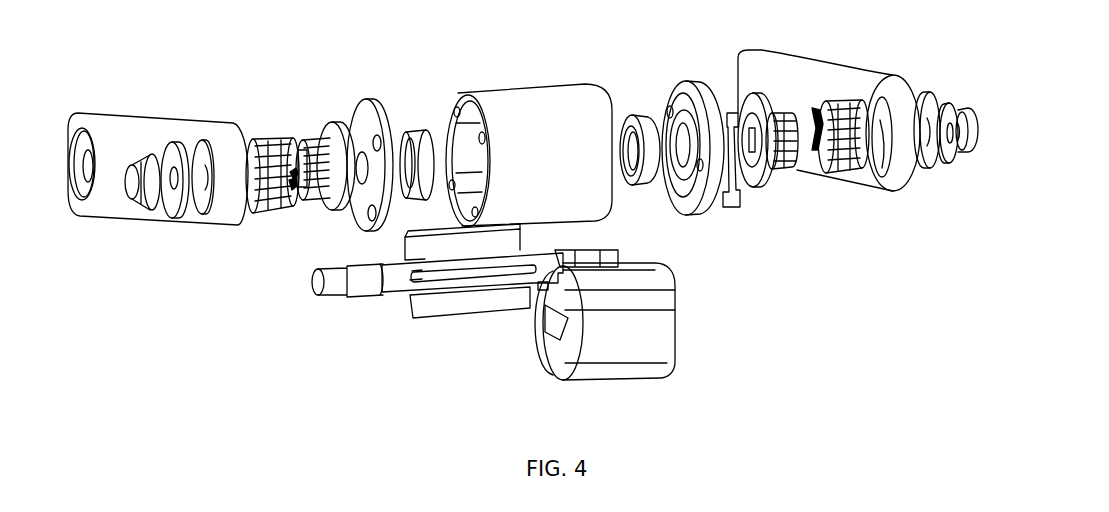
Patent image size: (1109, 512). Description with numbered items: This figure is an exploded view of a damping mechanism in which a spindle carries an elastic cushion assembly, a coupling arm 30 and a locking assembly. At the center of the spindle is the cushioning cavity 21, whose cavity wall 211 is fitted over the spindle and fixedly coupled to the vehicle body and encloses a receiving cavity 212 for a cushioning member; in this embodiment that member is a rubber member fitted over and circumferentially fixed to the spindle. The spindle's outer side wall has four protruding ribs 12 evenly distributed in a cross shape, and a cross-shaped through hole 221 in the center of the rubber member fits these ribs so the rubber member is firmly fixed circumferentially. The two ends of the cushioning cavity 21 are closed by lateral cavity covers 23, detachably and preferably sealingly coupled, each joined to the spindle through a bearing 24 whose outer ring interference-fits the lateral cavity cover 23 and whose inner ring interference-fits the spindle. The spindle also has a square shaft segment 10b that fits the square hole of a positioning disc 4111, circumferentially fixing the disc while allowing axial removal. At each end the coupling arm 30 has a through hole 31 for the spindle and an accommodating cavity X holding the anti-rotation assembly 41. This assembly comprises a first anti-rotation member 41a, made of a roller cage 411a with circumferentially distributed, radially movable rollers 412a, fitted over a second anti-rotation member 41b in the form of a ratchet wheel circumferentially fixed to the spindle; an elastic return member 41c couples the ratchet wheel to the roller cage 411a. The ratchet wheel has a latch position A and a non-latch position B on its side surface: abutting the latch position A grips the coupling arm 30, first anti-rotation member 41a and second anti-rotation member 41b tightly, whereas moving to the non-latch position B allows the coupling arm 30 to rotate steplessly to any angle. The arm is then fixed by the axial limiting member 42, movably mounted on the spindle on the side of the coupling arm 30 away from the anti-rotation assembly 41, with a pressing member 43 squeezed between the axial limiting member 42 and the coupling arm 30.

The coupling arm 30 is at (145, 127).
The axial limiting member 42 is at (147, 193).
The pressing member 43 is at (172, 217).
The through hole 31 is at (208, 214).
The anti-rotation assembly 41 is at (571, 182).
The first anti-rotation member 41a is at (571, 177).
The second anti-rotation member 41b is at (325, 205).
The elastic return member 41c is at (558, 201).
The roller cage 411a is at (268, 208).
The rollers 412a is at (574, 169).
The lateral cavity cover 23 is at (362, 128).
The bearing 24 is at (418, 155).
The receiving cavity 212 is at (463, 147).
The cavity wall 211 is at (474, 108).
The cushioning cavity 21 is at (537, 140).
The positioning disc 4111 is at (738, 197).
The square shaft segment 10b is at (360, 283).
The protruding rib 12 is at (432, 315).
The cross-shaped through hole 221 is at (553, 343).
The latch position A is at (270, 158).
The non-latch position B is at (296, 160).
The accommodating cavity X is at (845, 80).